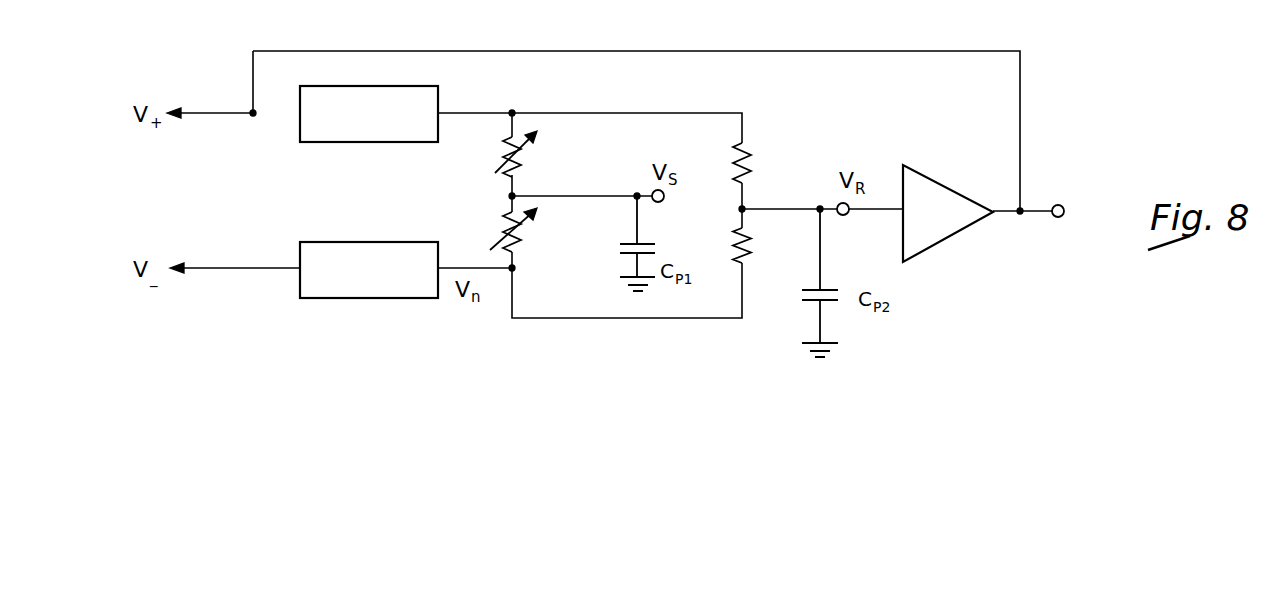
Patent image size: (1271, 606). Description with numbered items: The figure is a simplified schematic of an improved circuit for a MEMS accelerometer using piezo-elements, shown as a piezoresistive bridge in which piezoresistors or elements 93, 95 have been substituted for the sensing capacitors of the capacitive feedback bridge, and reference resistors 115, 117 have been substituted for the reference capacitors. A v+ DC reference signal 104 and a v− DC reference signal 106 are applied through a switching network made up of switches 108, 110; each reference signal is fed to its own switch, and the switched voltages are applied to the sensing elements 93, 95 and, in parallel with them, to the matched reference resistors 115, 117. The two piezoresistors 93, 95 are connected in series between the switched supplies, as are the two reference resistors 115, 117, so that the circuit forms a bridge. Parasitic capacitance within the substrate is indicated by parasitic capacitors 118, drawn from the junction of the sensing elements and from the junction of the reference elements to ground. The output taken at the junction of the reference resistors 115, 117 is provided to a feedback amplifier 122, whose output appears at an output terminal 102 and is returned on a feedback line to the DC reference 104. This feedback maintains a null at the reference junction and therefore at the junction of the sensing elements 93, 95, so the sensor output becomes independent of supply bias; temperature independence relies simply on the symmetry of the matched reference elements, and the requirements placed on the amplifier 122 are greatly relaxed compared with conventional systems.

The piezoresistor 93 is at (522, 130).
The piezoresistor 95 is at (518, 248).
The output terminal 102 is at (1065, 205).
The v+ DC reference signal 104 is at (230, 110).
The v− DC reference signal 106 is at (277, 272).
The switch 108 is at (382, 86).
The switch 110 is at (393, 298).
The reference resistor 115 is at (748, 135).
The reference resistor 117 is at (745, 268).
The parasitic capacitor 118 is at (647, 258).
The feedback amplifier 122 is at (952, 225).